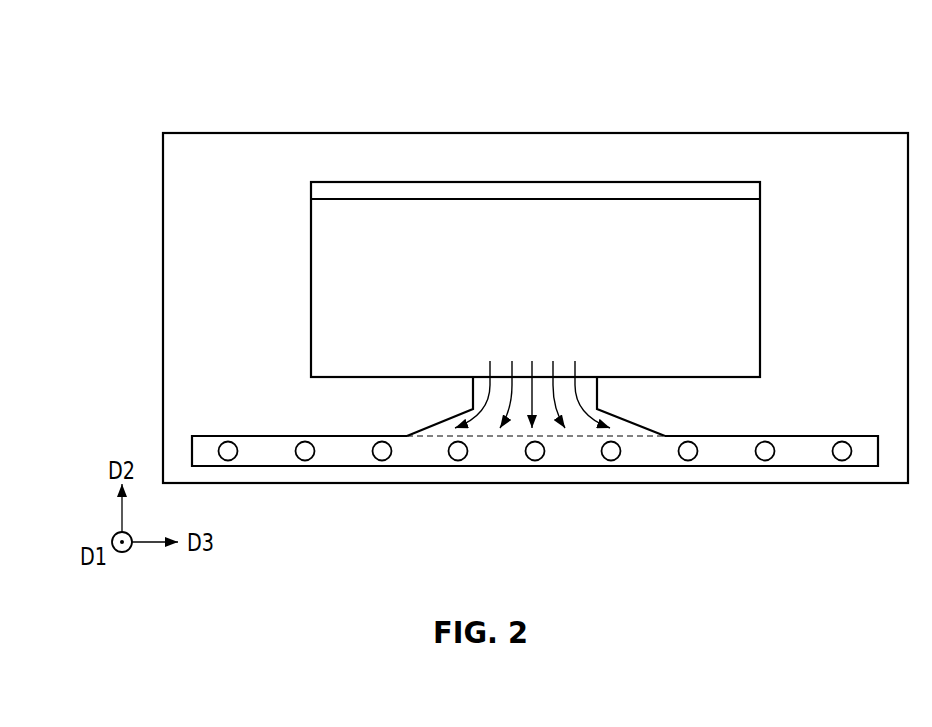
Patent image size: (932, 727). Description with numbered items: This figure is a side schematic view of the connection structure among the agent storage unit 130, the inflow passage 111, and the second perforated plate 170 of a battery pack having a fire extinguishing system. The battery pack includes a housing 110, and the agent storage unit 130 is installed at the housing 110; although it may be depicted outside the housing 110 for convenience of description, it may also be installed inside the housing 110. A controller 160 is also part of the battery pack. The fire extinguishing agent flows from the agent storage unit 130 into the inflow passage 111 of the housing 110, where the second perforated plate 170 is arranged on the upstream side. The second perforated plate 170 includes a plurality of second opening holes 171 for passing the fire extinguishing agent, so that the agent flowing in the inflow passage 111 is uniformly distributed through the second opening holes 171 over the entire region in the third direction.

The housing 110 is at (503, 133).
The inflow passage 111 is at (645, 465).
The agent storage unit 130 is at (583, 220).
The controller 160 is at (658, 187).
The second perforated plate 170 is at (818, 456).
The second opening holes 171 is at (765, 460).